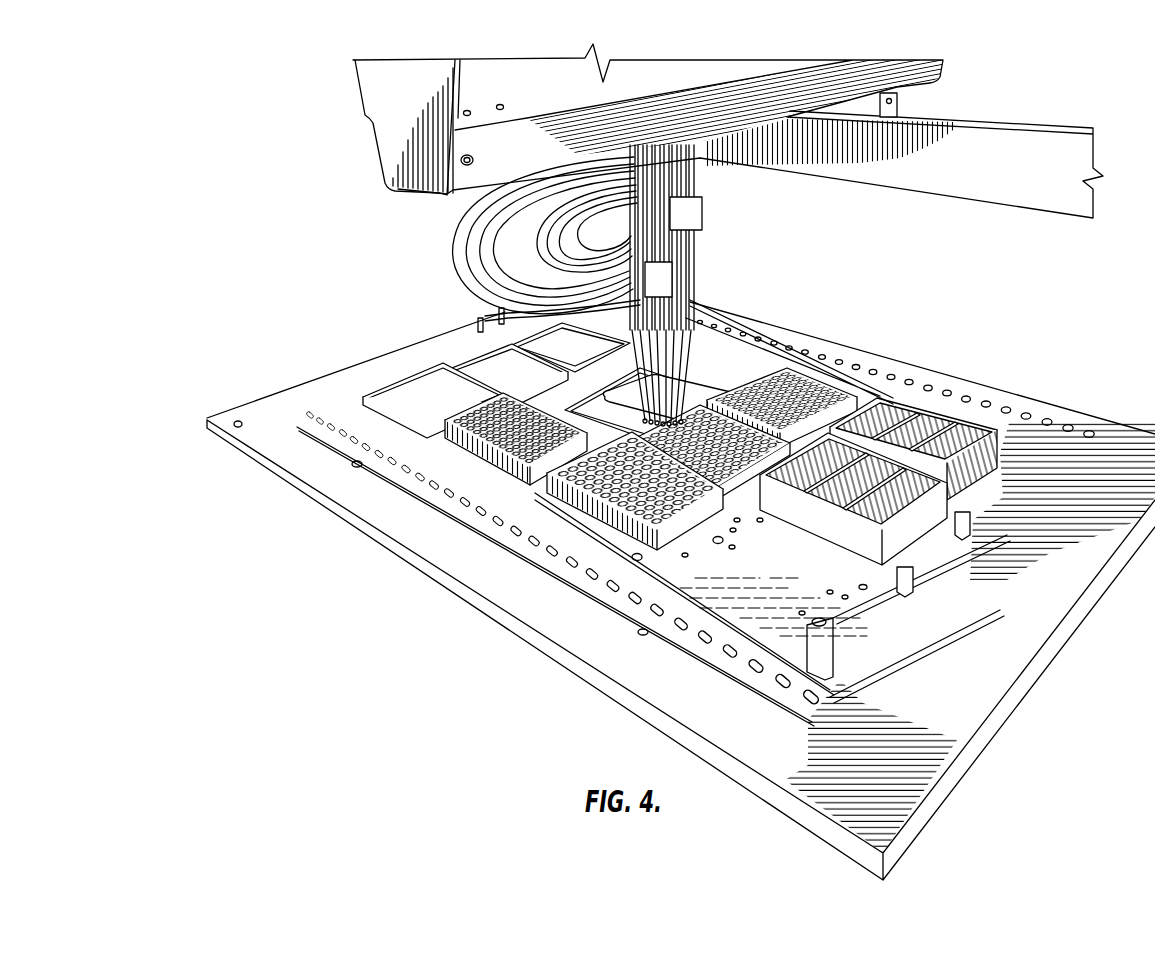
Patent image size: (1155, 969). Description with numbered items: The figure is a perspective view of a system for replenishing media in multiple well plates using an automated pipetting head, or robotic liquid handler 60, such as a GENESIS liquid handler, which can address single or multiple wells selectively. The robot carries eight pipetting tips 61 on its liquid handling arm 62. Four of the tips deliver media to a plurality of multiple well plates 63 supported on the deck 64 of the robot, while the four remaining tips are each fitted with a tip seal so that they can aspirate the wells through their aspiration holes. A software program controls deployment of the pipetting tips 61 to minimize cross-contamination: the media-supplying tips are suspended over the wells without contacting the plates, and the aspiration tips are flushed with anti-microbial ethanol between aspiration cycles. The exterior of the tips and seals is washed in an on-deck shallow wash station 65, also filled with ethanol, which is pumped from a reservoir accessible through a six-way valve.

The automated pipetting head 60 is at (985, 99).
The pipetting tips 61 is at (693, 281).
The liquid handling arm 62 is at (613, 121).
The multiple well plates 63 is at (803, 387).
The deck 64 is at (850, 612).
The on-deck shallow wash station 65 is at (943, 423).